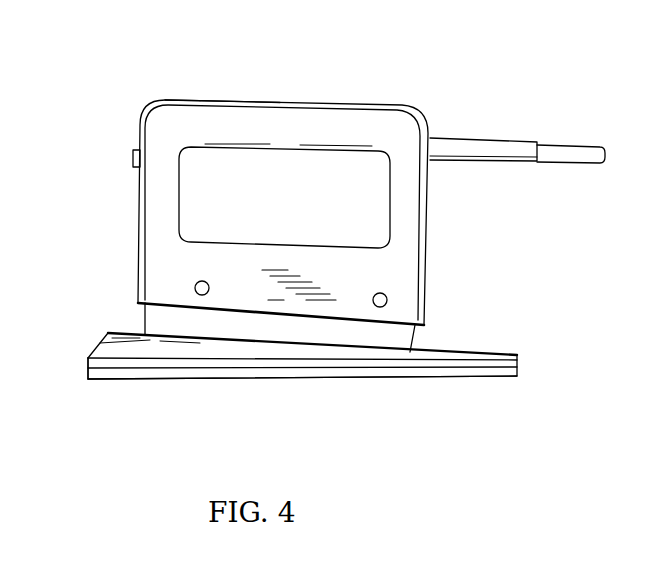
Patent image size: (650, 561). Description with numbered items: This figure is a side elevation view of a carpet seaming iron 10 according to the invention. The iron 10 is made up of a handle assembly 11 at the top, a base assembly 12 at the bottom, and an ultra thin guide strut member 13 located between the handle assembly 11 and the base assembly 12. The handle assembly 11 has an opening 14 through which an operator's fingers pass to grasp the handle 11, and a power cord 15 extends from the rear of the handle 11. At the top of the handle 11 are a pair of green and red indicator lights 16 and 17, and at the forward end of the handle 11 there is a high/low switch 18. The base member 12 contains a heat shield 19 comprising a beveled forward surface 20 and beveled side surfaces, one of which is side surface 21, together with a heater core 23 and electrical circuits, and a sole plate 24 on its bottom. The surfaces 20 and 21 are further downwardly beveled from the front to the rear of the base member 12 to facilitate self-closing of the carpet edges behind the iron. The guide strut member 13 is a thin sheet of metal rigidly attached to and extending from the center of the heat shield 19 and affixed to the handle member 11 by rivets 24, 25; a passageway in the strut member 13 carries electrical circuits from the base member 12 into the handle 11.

The carpet seaming iron 10 is at (290, 90).
The handle assembly 11 is at (368, 100).
The base assembly 12 is at (428, 381).
The guide strut member 13 is at (418, 334).
The opening 14 is at (274, 206).
The power cord 15 is at (467, 138).
The green indicator light 16 is at (182, 99).
The red indicator light 17 is at (195, 99).
The high/low switch 18 is at (132, 163).
The heat shield 19 is at (93, 316).
The beveled forward surface 20 is at (103, 345).
The beveled side surface 21 is at (152, 348).
The heater core 23 is at (83, 371).
The sole plate / rivet 24 is at (139, 379).
The rivet 25 is at (380, 308).